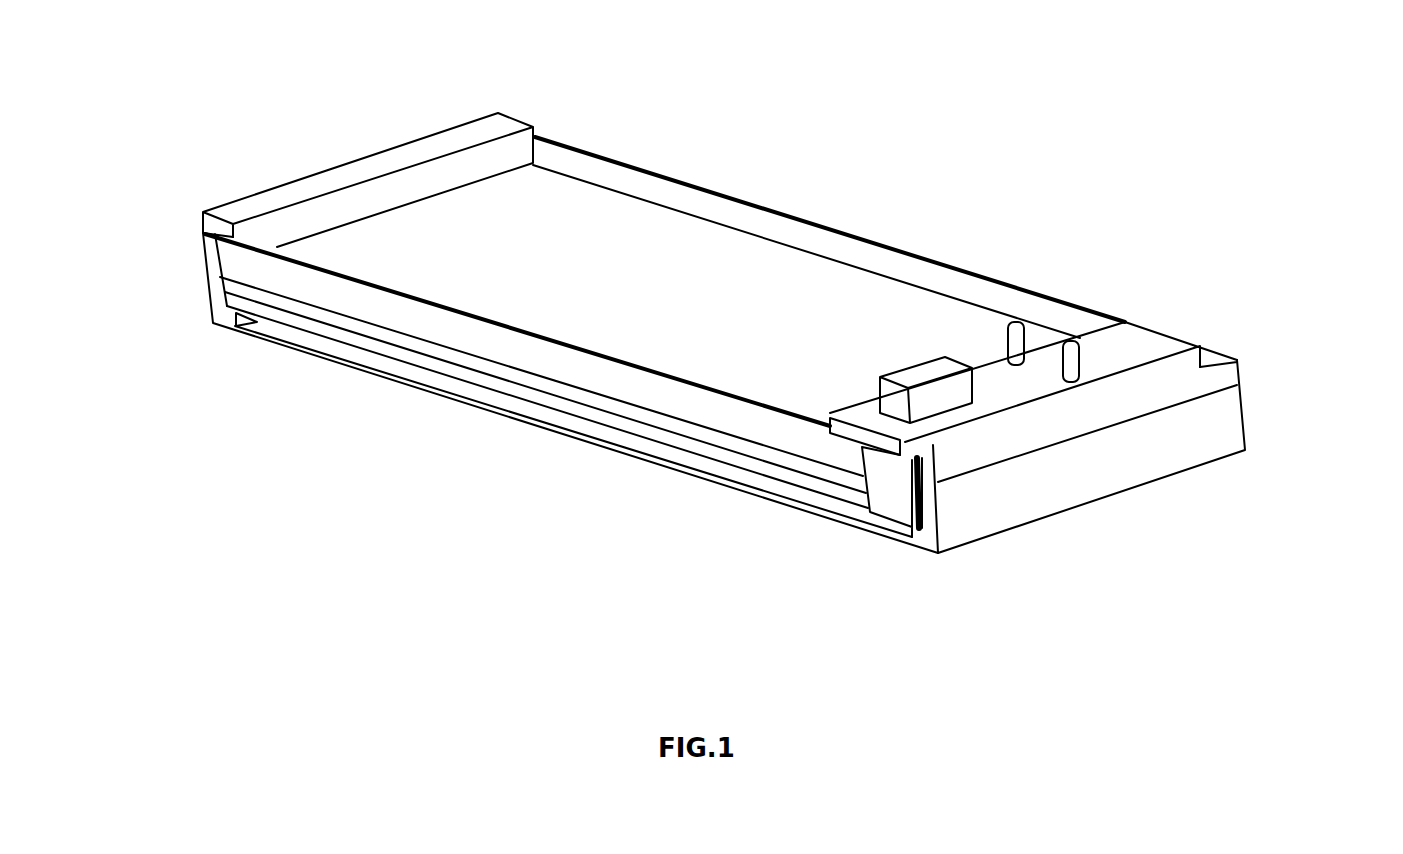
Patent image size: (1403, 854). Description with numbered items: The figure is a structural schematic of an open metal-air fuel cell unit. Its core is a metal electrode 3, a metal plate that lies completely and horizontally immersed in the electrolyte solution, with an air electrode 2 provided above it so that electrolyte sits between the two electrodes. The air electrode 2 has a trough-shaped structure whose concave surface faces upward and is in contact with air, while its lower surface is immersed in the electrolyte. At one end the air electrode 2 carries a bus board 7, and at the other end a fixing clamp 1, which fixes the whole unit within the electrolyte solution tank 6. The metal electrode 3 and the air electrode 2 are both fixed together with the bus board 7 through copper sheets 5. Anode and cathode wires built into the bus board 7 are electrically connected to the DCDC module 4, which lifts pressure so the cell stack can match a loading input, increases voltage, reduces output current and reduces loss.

The fixing clamp 1 is at (275, 185).
The air electrode 2 is at (275, 270).
The metal electrode 3 is at (312, 328).
The DCDC module 4 is at (893, 412).
The copper sheets 5 is at (898, 508).
The electrolyte solution tank 6 is at (1210, 450).
The bus board 7 is at (1185, 386).